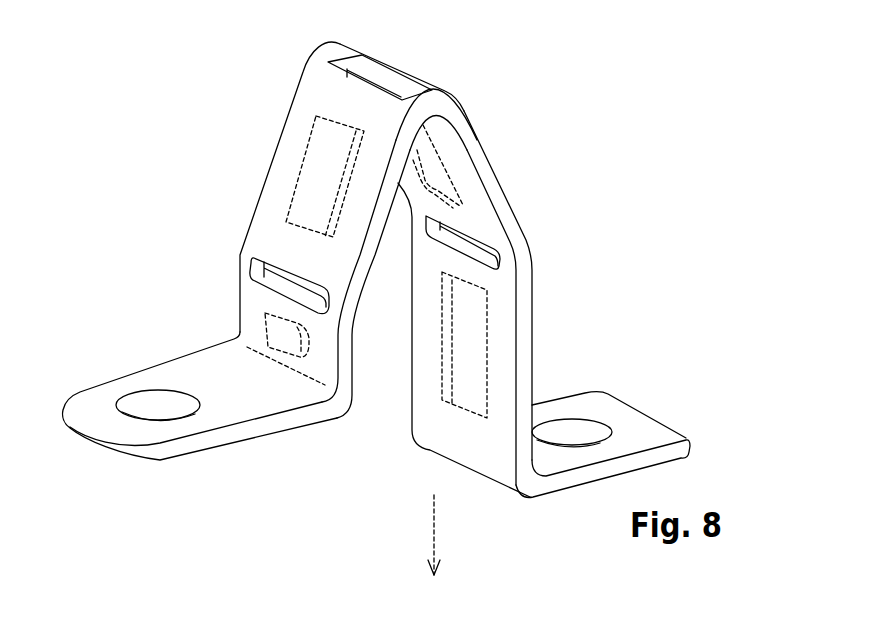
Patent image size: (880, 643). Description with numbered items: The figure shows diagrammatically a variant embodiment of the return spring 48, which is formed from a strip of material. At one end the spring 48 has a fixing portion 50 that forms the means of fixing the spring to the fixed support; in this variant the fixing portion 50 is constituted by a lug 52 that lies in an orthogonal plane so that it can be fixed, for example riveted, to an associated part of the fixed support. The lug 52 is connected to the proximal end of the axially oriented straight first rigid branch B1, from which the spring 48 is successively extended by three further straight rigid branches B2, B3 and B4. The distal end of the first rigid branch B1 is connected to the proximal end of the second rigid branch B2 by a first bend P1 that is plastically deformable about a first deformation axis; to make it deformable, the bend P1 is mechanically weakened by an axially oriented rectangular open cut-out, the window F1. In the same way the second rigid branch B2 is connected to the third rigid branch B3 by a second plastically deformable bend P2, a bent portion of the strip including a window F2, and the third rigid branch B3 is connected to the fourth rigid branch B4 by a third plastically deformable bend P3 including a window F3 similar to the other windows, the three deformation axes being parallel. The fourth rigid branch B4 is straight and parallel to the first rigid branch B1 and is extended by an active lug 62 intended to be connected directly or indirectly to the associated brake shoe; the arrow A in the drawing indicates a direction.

The return spring 48 is at (370, 255).
The first bend P1 is at (247, 267).
The second bend P2 is at (462, 99).
The third bend P3 is at (523, 258).
The window F1 is at (297, 300).
The window F2 is at (397, 80).
The window F3 is at (472, 252).
The first rigid branch B1 is at (257, 303).
The second rigid branch B2 is at (302, 250).
The third rigid branch B3 is at (467, 218).
The fourth rigid branch B4 is at (465, 362).
The fixing portion 50 is at (193, 386).
The lug 52 is at (93, 417).
The active lug 62 is at (637, 428).
The insertion direction A is at (427, 535).